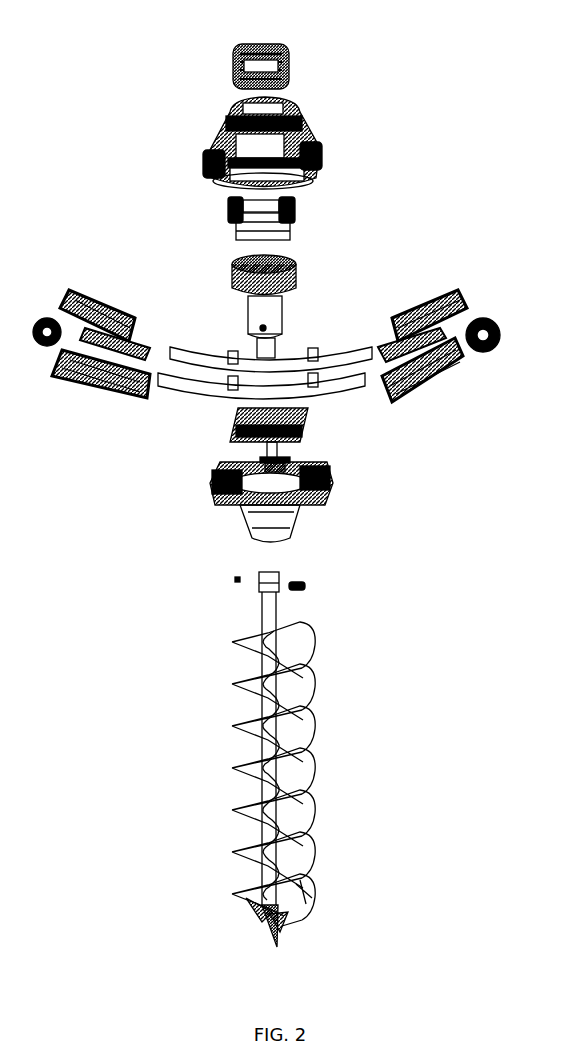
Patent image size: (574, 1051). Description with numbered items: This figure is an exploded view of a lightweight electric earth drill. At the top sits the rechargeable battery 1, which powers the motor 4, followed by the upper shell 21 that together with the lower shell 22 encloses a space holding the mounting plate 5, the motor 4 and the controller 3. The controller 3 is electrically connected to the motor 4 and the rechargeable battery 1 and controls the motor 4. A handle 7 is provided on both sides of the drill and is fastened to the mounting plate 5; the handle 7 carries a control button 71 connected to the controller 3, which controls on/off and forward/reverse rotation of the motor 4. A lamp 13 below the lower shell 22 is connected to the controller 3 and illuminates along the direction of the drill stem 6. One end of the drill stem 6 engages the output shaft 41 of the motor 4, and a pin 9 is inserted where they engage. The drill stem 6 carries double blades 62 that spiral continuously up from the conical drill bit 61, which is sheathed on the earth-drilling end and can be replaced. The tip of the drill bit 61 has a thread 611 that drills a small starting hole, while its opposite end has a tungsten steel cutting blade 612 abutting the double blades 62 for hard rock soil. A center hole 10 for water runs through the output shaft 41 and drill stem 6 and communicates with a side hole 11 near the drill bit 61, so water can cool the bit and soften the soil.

The rechargeable battery 1 is at (290, 61).
The upper shell 21 is at (328, 132).
The controller 3 is at (288, 228).
The motor 4 is at (291, 281).
The output shaft 41 is at (277, 347).
The handle 7 is at (187, 318).
The control button 71 is at (492, 352).
The mounting plate 5 is at (313, 435).
The lamp 13 is at (268, 460).
The lower shell 22 is at (305, 520).
The pin 9 is at (308, 580).
The center hole 10 is at (247, 252).
The drill stem 6 is at (342, 660).
The double blades 62 is at (315, 777).
The side hole 11 is at (306, 888).
The drill bit 61 is at (310, 918).
The cutting blade 612 is at (268, 912).
The thread 611 is at (272, 923).